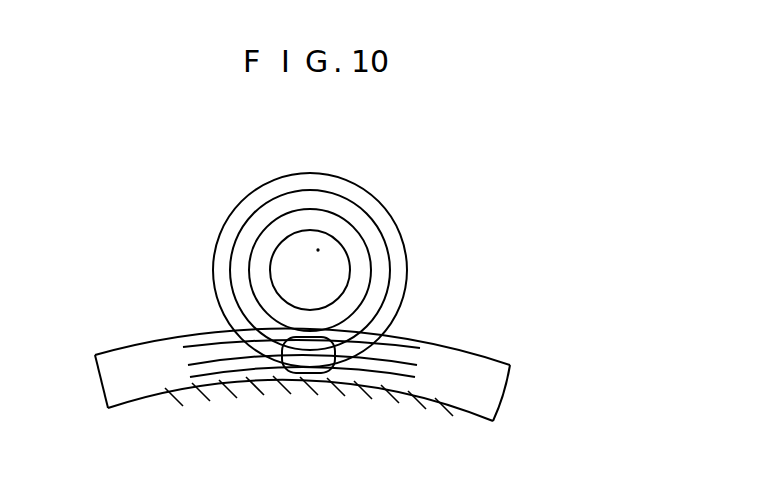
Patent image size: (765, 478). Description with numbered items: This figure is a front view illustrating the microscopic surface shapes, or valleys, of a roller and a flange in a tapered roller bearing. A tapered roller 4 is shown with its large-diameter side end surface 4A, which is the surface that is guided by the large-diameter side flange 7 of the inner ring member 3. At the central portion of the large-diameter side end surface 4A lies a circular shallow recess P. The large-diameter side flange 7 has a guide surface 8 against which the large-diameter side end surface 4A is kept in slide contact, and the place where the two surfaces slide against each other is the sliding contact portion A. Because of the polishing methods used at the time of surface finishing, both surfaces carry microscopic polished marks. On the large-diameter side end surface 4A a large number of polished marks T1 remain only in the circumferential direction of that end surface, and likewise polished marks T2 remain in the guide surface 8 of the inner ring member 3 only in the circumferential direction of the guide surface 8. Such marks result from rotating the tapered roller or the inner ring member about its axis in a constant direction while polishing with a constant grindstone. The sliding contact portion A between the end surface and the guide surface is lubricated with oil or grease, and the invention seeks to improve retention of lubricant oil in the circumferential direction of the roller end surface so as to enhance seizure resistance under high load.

The tapered roller 4 is at (320, 260).
The large-diameter side end surface 4A is at (243, 213).
The circular shallow recess P is at (318, 250).
The polished marks T1 is at (368, 243).
The polished marks T2 is at (414, 378).
The inner ring member 3 is at (482, 352).
The large-diameter side flange 7 is at (164, 341).
The guide surface 8 is at (145, 358).
The sliding contact portion A is at (330, 373).